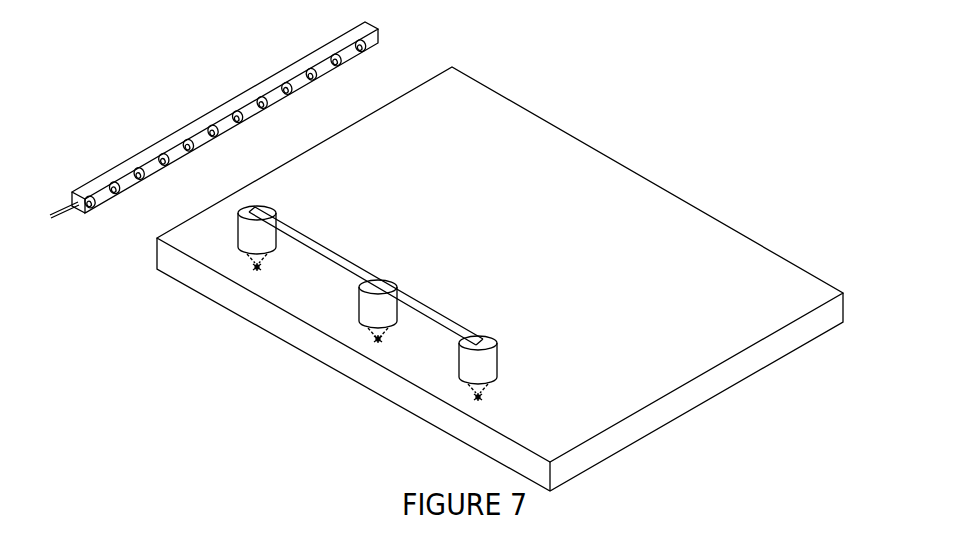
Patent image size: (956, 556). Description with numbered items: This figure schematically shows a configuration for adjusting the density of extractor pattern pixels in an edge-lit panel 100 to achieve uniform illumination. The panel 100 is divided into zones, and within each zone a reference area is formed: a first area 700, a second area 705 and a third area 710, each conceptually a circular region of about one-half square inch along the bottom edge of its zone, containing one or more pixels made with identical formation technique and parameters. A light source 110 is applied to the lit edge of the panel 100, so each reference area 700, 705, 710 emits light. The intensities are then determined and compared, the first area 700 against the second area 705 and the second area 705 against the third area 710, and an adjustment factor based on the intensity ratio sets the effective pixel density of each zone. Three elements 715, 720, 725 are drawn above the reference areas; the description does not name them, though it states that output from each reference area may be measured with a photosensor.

The panel 100 is at (420, 93).
The light source 110 is at (168, 139).
The first reference area 700 is at (255, 269).
The second reference area 705 is at (377, 337).
The third reference area 710 is at (475, 395).
The first lens element 715 is at (242, 213).
The second lens element 720 is at (361, 300).
The third lens element 725 is at (467, 357).